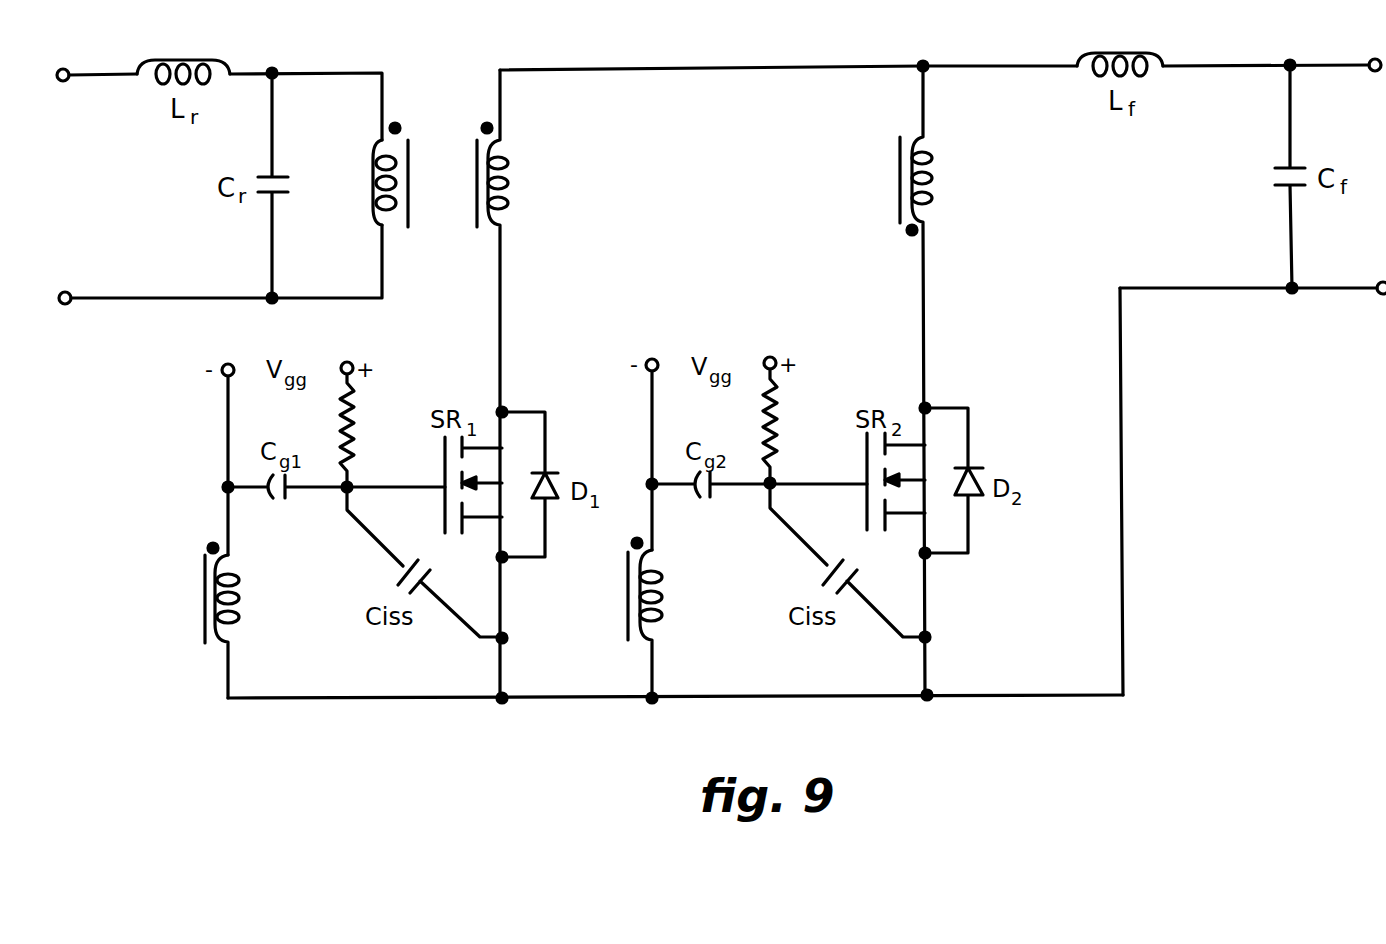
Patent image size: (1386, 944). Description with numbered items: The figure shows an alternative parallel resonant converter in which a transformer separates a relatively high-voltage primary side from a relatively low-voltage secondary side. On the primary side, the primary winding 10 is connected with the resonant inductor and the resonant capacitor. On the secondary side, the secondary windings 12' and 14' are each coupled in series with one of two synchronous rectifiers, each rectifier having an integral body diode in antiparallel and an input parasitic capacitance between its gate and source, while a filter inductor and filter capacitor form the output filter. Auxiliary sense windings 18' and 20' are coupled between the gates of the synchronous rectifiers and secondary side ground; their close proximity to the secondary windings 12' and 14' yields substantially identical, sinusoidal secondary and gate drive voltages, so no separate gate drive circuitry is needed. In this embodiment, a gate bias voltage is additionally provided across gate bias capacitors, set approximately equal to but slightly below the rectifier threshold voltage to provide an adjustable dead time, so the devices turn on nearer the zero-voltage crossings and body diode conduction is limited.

The primary winding 10 is at (373, 187).
The secondary winding 12' is at (537, 384).
The secondary winding 14' is at (959, 380).
The auxiliary sense winding 18' is at (159, 620).
The auxiliary sense winding 20' is at (695, 618).